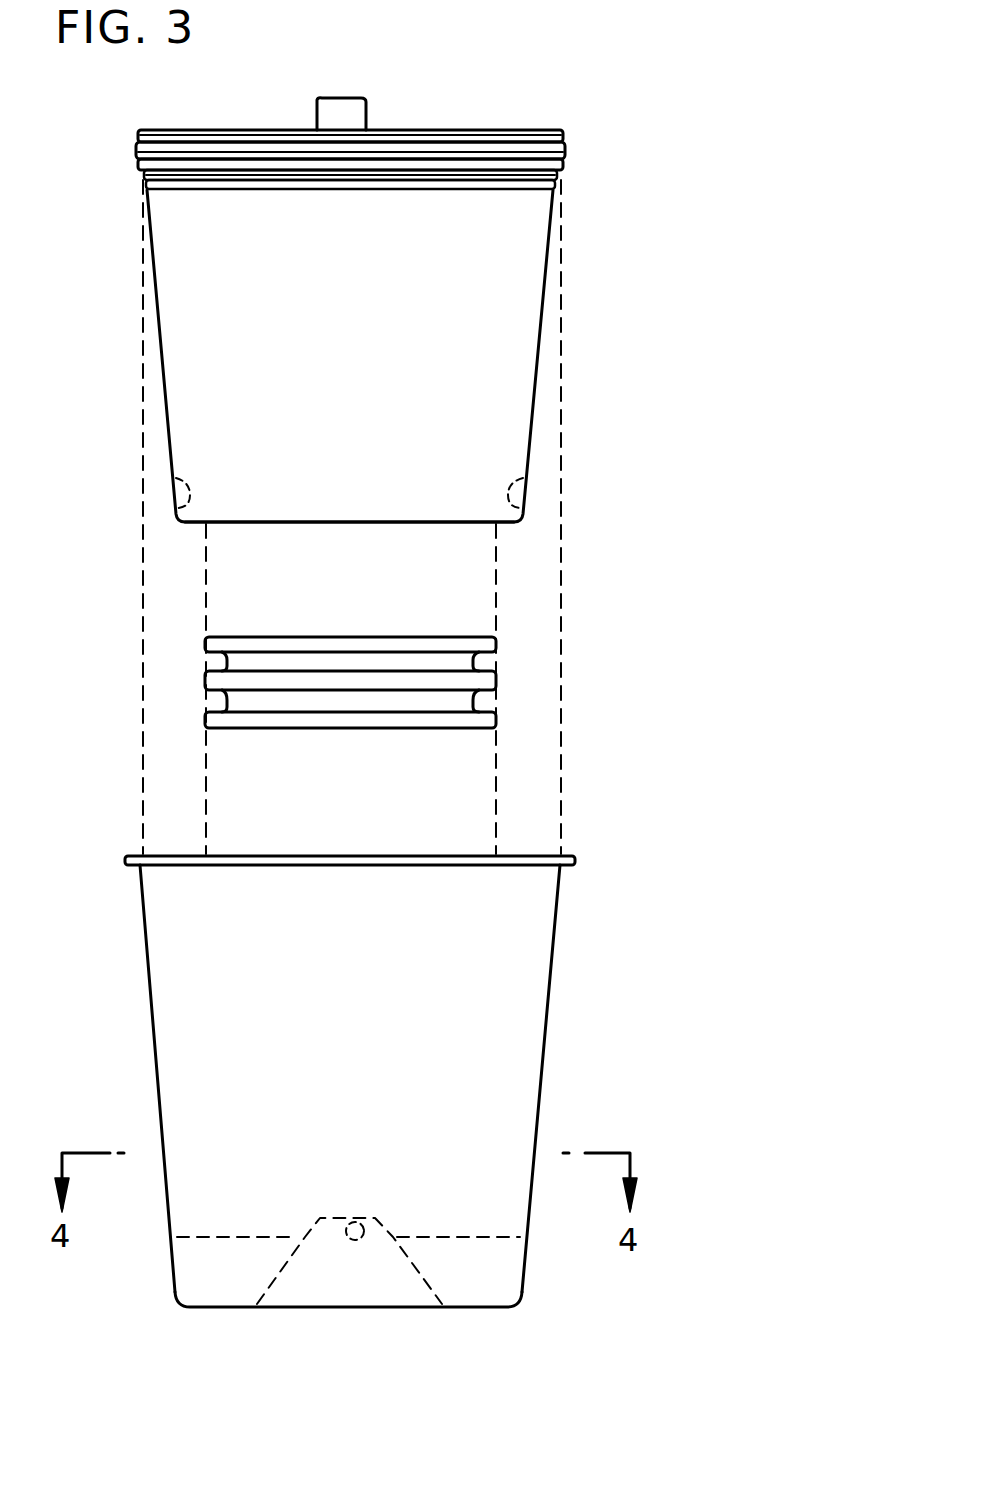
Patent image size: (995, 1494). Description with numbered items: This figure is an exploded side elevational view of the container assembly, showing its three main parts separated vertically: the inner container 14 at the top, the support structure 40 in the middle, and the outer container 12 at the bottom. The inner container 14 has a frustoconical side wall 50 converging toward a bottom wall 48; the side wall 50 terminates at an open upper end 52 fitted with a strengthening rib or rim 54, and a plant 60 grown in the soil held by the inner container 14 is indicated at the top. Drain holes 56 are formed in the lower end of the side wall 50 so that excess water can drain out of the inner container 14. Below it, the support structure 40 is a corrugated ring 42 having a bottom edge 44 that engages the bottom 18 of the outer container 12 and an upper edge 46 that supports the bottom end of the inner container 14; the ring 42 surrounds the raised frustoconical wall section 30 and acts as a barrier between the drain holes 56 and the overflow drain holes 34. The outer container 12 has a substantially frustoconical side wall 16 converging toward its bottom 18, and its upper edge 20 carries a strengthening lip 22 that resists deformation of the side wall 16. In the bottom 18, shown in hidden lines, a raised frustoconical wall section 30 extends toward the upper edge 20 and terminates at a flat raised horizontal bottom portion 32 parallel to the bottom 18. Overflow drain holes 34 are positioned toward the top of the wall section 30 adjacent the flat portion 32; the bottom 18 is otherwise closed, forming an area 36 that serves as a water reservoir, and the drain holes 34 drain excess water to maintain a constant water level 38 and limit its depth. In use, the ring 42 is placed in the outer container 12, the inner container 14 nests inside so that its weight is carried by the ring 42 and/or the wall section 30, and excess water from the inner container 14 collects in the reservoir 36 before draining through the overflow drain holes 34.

The outer container 12 is at (583, 900).
The inner container 14 is at (520, 110).
The side wall 16 is at (551, 988).
The bottom 18 is at (212, 1305).
The upper edge 20 is at (568, 849).
The strengthening lip 22 is at (575, 856).
The raised frustoconical wall section 30 is at (394, 1232).
The flat raised horizontal bottom portion 32 is at (343, 1217).
The overflow drain holes 34 is at (350, 1241).
The area for containing water 36 is at (475, 1290).
The constant water level 38 is at (468, 1237).
The support structure 40 is at (505, 667).
The corrugated ring 42 is at (497, 643).
The bottom edge 44 is at (370, 730).
The upper edge 46 is at (416, 637).
The bottom wall 48 is at (342, 525).
The frustoconical side wall 50 is at (545, 318).
The open upper end 52 is at (566, 132).
The strengthening rib or rim 54 is at (566, 148).
The drain holes 56 is at (185, 480).
The plant 60 is at (368, 110).